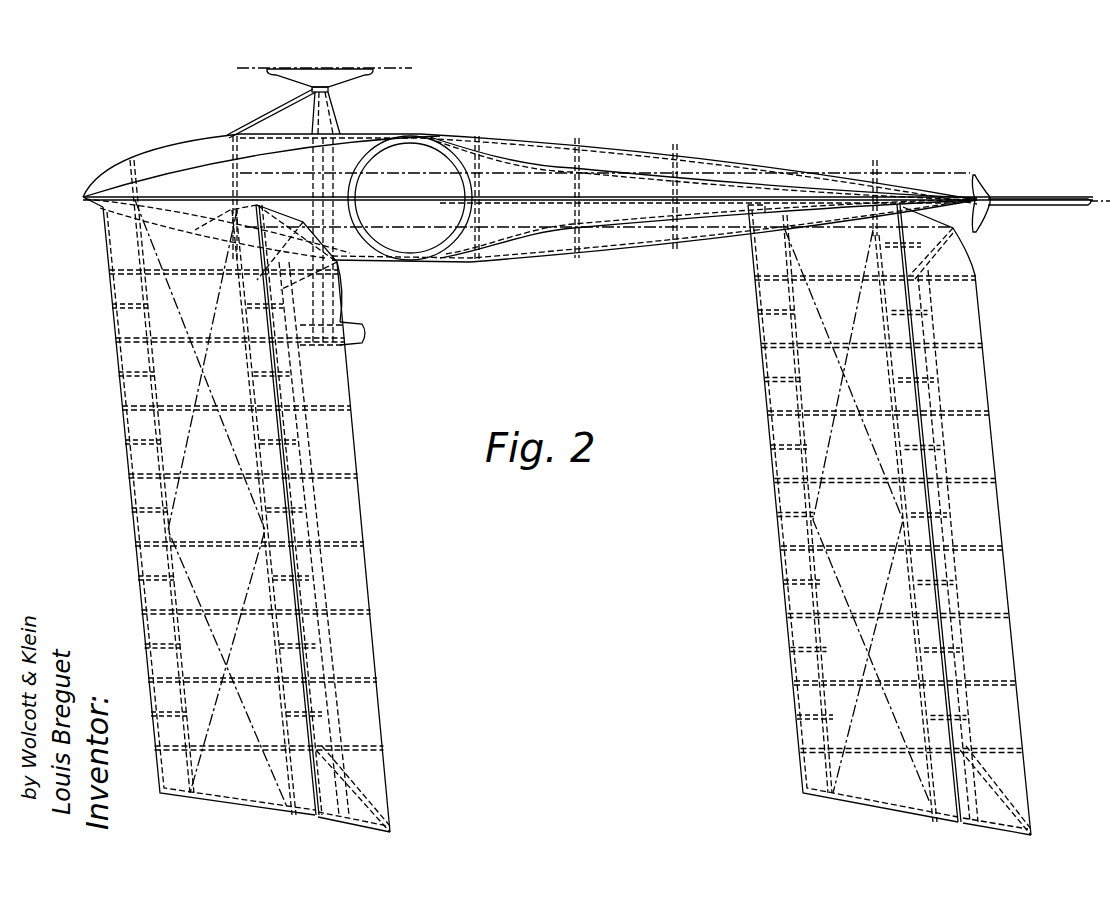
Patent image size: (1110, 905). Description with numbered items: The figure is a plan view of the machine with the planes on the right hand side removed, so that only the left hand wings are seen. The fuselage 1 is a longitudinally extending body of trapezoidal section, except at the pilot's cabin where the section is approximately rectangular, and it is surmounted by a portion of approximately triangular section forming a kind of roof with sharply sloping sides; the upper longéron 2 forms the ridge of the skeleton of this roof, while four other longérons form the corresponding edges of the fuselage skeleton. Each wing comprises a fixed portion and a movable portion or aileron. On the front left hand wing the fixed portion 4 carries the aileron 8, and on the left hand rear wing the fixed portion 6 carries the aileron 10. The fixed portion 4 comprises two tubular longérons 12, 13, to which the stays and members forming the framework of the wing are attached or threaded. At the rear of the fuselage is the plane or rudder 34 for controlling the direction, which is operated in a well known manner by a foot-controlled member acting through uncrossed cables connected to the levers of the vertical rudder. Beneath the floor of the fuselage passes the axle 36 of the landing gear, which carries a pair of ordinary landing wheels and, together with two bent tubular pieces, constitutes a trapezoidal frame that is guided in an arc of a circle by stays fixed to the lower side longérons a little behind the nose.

The fuselage 1 is at (548, 240).
The upper longéron 2 is at (432, 207).
The fixed portion of front left hand wing 4 is at (192, 566).
The fixed portion of left hand rear wing 6 is at (838, 507).
The aileron of left hand forward wing 8 is at (355, 718).
The aileron of left hand rear wing 10 is at (990, 716).
The tubular longéron 12 is at (148, 428).
The tubular longéron 13 is at (255, 458).
The rudder 34 is at (1014, 200).
The axle 36 is at (320, 345).